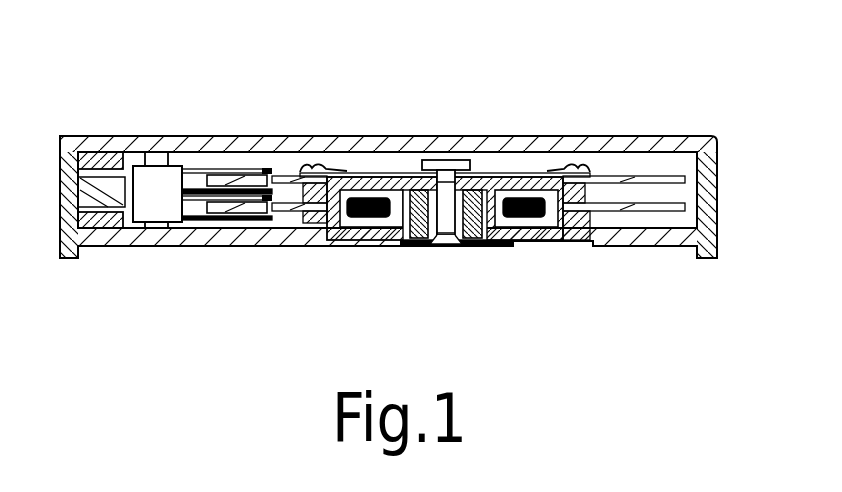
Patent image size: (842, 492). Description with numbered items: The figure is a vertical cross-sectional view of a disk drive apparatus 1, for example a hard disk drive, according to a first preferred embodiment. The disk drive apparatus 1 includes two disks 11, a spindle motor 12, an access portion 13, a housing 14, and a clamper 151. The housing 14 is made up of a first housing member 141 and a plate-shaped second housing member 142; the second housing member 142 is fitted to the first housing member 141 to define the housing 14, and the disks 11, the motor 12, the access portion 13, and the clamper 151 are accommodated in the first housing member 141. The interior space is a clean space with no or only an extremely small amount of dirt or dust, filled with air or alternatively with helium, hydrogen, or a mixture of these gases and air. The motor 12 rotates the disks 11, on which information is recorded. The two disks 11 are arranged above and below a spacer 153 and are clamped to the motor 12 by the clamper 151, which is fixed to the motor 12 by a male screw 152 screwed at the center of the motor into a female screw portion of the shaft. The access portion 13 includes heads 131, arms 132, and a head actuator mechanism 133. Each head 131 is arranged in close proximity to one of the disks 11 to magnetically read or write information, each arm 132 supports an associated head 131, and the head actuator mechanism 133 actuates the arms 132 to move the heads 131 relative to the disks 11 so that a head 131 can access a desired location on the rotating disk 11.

The disk drive apparatus 1 is at (402, 165).
The disks 11 is at (640, 181).
The spindle motor 12 is at (445, 184).
The access portion 13 is at (176, 152).
The heads 131 is at (268, 169).
The arms 132 is at (198, 165).
The head actuator mechanism 133 is at (155, 186).
The housing 14 is at (408, 147).
The first housing member 141 is at (719, 168).
The second housing member 142 is at (638, 148).
The clamper 151 is at (368, 172).
The male screw 152 is at (447, 162).
The spacer 153 is at (313, 195).